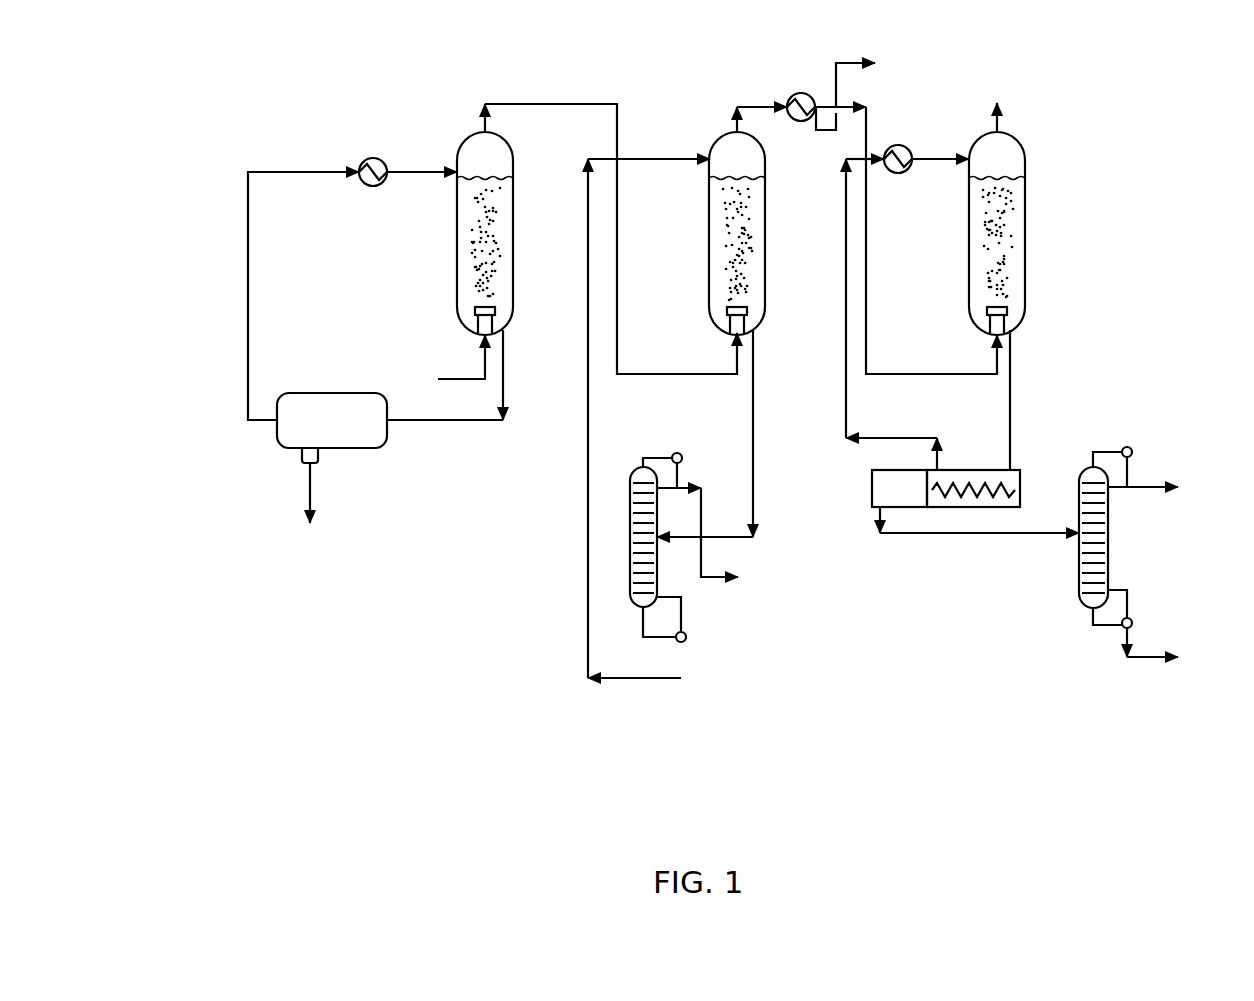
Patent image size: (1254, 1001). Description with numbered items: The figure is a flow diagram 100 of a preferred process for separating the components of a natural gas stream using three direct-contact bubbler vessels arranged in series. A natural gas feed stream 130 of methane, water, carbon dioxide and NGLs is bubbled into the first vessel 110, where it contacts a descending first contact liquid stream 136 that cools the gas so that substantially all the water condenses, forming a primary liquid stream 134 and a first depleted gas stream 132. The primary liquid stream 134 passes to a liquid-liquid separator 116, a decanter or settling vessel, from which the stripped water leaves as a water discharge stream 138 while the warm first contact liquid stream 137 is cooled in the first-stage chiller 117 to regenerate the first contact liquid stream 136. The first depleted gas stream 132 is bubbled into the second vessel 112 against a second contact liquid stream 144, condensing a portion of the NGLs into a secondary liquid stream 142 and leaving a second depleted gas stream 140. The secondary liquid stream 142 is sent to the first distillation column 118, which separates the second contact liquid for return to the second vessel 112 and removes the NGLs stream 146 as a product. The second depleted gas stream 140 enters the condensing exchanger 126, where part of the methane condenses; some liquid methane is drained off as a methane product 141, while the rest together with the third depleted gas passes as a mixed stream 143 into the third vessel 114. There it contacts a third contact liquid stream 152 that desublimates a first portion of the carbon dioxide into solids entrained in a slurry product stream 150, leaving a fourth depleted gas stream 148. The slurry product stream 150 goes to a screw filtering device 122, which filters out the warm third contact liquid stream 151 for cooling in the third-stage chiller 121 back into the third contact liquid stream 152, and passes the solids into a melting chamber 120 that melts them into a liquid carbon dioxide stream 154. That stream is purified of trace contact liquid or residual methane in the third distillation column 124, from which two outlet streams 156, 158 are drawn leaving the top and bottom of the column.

The flow diagram 100 is at (218, 122).
The first vessel 110 is at (514, 272).
The second vessel 112 is at (766, 274).
The third vessel 114 is at (1026, 265).
The liquid-liquid separator 116 is at (277, 448).
The first-stage chiller 117 is at (363, 160).
The first distillation column 118 is at (630, 480).
The melting chamber 120 is at (872, 493).
The third-stage chiller 121 is at (906, 173).
The screw filtering device 122 is at (1020, 487).
The third distillation column 124 is at (1109, 565).
The condensing exchanger 126 is at (797, 94).
The natural gas feed stream 130 is at (435, 364).
The first depleted gas stream 132 is at (611, 223).
The primary liquid stream 134 is at (446, 394).
The first contact liquid stream 136 is at (422, 157).
The warm first contact liquid stream 137 is at (303, 296).
The water discharge stream 138 is at (313, 513).
The second depleted gas stream 140 is at (756, 102).
The methane product 141 is at (874, 89).
The secondary liquid stream 142 is at (733, 433).
The mixed stream 143 is at (906, 241).
The second contact liquid stream 144 is at (649, 403).
The NGLs stream 146 is at (726, 530).
The fourth depleted gas stream 148 is at (999, 103).
The slurry product stream 150 is at (1038, 400).
The warm third contact liquid stream 151 is at (891, 314).
The third contact liquid stream 152 is at (917, 143).
The liquid carbon dioxide stream 154 is at (979, 537).
The second column overhead product 156 is at (1171, 485).
The second column bottoms product 158 is at (1180, 650).